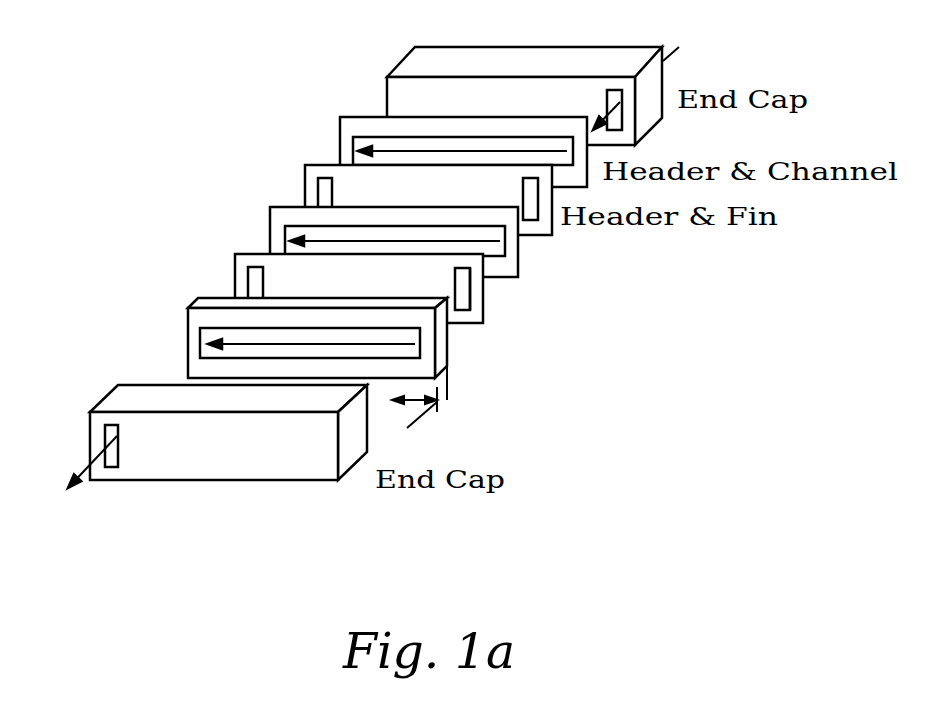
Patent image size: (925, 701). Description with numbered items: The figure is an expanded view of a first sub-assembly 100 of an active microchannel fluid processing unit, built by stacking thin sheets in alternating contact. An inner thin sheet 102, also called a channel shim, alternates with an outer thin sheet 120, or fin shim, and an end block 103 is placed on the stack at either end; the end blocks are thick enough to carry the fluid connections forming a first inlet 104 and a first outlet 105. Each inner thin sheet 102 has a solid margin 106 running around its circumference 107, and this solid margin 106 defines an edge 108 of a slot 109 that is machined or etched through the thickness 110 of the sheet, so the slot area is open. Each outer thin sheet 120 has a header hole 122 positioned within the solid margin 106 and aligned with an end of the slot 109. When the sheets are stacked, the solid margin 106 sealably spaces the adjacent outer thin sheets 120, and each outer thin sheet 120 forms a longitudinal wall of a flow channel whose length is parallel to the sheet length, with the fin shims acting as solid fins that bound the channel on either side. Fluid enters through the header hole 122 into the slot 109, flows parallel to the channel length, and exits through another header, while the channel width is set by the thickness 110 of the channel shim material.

The first sub-assembly 100 is at (386, 291).
The inner thin sheet 102 is at (332, 278).
The end block 103 is at (222, 460).
The first inlet 104 is at (488, 290).
The first outlet 105 is at (105, 438).
The solid margin 106 is at (198, 318).
The circumference 107 is at (205, 303).
The edge 108 is at (225, 330).
The slot 109 is at (237, 337).
The thickness 110 is at (452, 378).
The outer thin sheet 120 is at (421, 292).
The header hole 122 is at (470, 273).